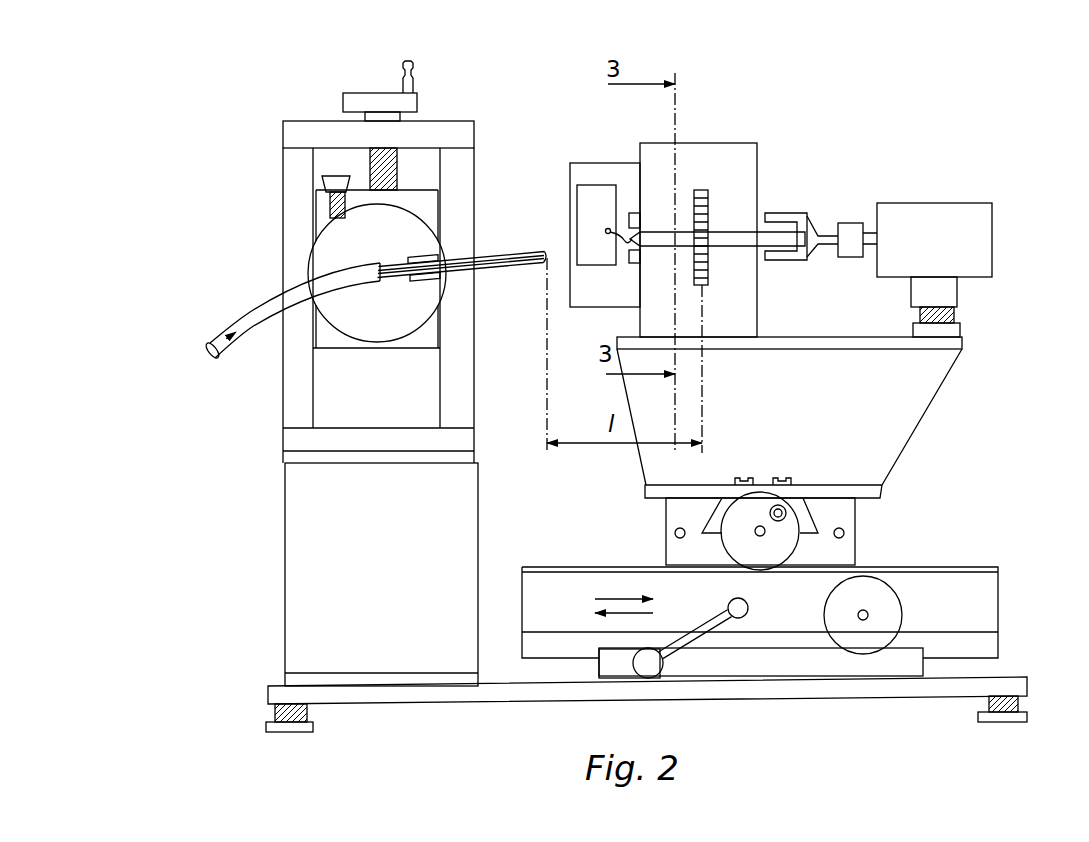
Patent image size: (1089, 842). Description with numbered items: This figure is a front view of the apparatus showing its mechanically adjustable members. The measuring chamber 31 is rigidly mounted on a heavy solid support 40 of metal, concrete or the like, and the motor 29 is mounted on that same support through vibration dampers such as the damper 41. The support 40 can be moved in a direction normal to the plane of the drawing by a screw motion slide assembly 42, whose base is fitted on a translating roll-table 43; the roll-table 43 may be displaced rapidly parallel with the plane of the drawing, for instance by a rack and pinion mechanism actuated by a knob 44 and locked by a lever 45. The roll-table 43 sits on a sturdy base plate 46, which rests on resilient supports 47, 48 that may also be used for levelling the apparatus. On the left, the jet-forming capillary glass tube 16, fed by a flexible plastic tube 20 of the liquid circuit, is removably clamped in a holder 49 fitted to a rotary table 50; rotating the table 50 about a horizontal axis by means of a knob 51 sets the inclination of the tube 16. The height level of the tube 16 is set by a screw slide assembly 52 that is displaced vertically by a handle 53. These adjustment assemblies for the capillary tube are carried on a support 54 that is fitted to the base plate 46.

The capillary glass tube 16 is at (495, 256).
The flexible plastic tube 20 is at (252, 315).
The motor 29 is at (943, 215).
The measuring chamber 31 is at (720, 143).
The support 40 is at (903, 422).
The vibration damper 41 is at (957, 315).
The screw motion slide assembly 42 is at (777, 547).
The translating roll-table 43 is at (975, 608).
The knob 44 is at (863, 648).
The lever 45 is at (648, 668).
The base plate 46 is at (522, 694).
The resilient support 47 is at (276, 714).
The resilient support 48 is at (1020, 704).
The holder 49 is at (437, 280).
The rotary table 50 is at (335, 242).
The knob 51 is at (322, 179).
The screw slide assembly 52 is at (425, 207).
The handle 53 is at (405, 103).
The support 54 is at (303, 531).